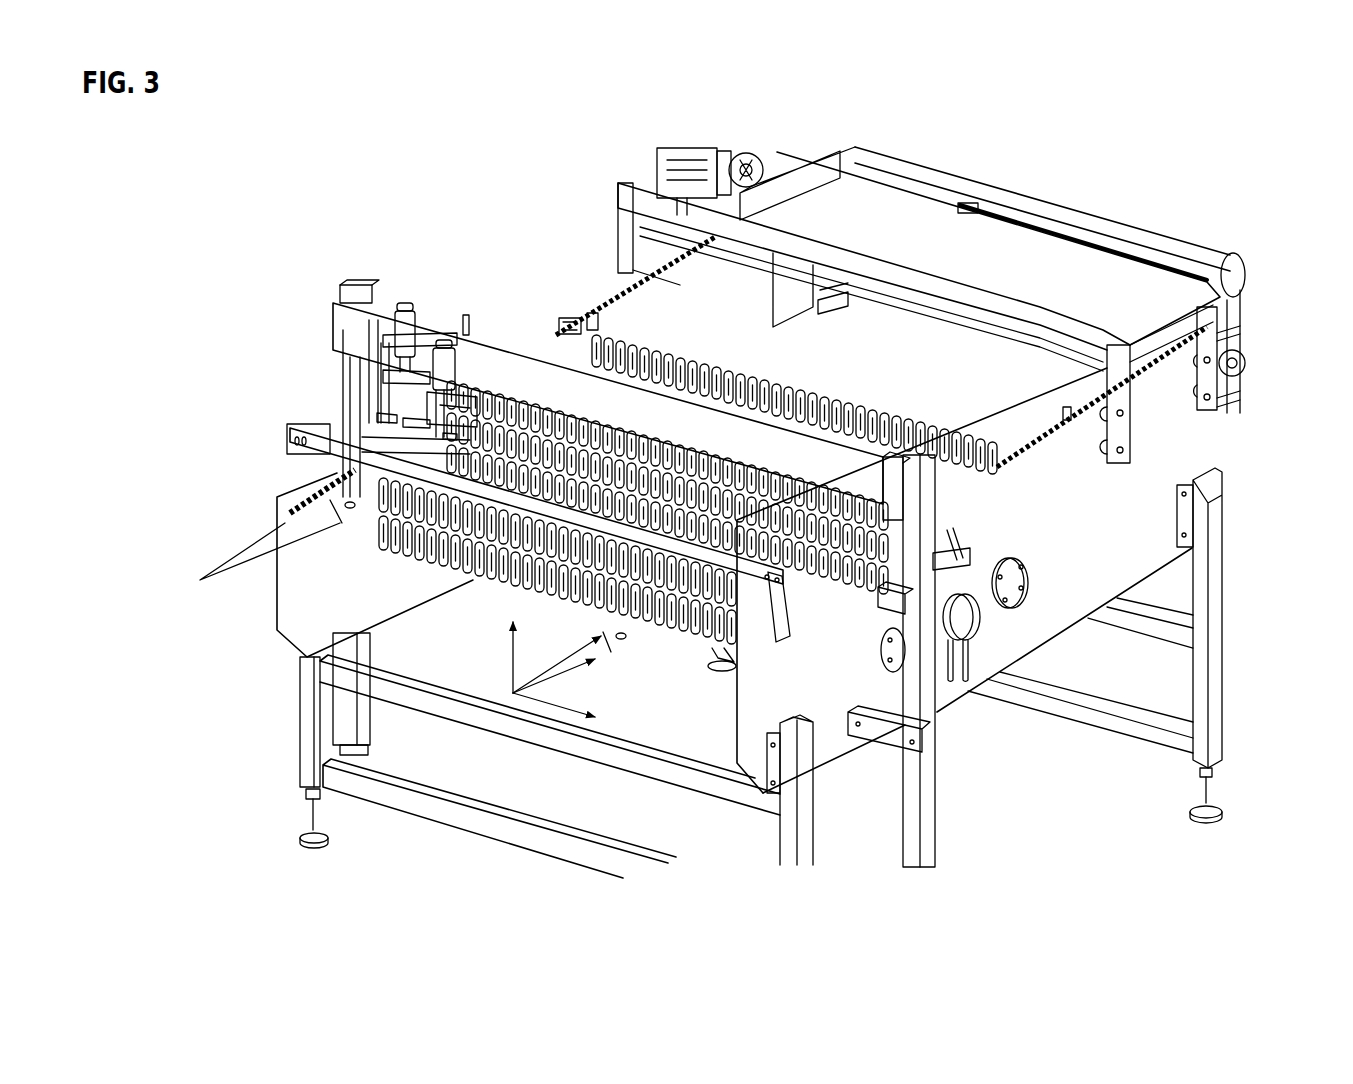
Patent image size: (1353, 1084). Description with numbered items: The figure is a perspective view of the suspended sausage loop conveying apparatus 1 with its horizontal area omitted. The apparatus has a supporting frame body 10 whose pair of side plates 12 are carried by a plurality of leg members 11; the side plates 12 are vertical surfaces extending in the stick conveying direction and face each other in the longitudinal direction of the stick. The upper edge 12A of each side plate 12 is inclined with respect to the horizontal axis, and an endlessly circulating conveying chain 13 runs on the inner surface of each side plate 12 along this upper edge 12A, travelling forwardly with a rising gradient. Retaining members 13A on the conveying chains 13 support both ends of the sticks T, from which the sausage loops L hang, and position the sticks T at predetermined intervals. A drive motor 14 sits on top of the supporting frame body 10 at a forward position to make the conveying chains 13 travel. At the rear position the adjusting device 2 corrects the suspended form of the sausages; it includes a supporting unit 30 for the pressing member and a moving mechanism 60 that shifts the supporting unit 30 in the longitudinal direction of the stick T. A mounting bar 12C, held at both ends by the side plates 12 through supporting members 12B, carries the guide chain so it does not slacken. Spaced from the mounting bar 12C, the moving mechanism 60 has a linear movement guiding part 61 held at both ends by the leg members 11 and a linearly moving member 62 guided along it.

The suspended sausage loop conveying apparatus 1 is at (484, 178).
The adjusting device 2 is at (313, 345).
The supporting frame body 10 is at (1185, 447).
The leg members 11 is at (1216, 710).
The side plates 12 is at (305, 600).
The upper edge 12A is at (618, 272).
The supporting members 12B is at (305, 460).
The mounting bar 12C is at (338, 425).
The conveying chain 13 is at (627, 297).
The retaining members 13A is at (567, 327).
The drive motor 14 is at (700, 162).
The supporting unit 30 is at (346, 362).
The moving mechanism 60 is at (442, 213).
The linear movement guiding part 61 is at (437, 335).
The linearly moving member 62 is at (397, 303).
The stick T is at (591, 313).
The sausage loop L is at (666, 345).